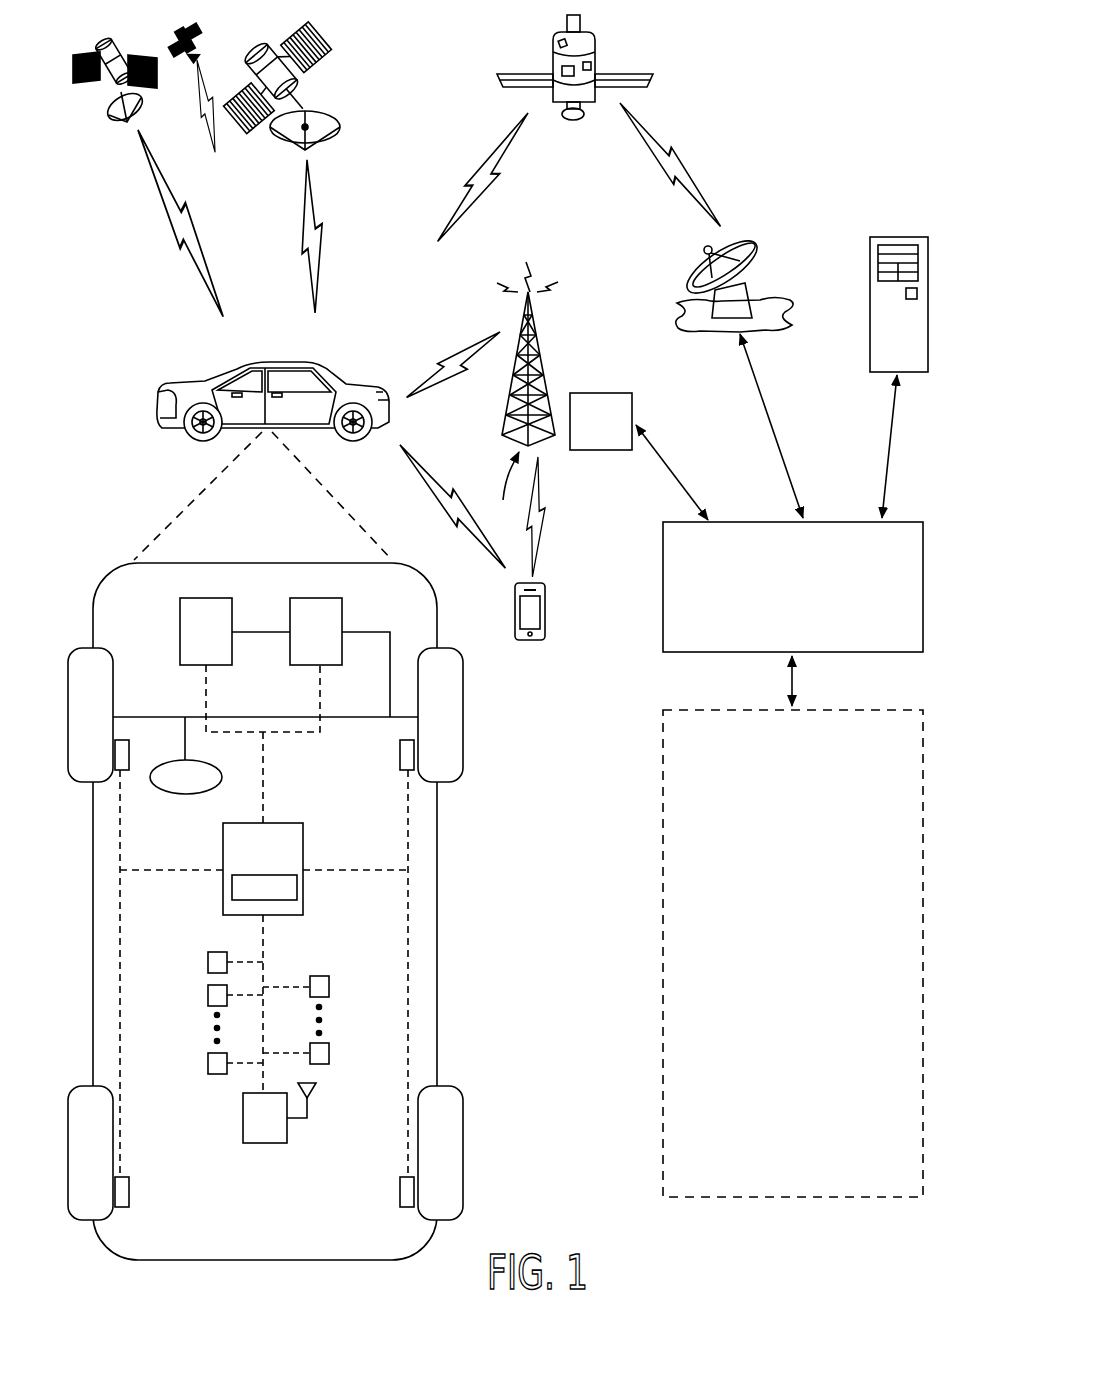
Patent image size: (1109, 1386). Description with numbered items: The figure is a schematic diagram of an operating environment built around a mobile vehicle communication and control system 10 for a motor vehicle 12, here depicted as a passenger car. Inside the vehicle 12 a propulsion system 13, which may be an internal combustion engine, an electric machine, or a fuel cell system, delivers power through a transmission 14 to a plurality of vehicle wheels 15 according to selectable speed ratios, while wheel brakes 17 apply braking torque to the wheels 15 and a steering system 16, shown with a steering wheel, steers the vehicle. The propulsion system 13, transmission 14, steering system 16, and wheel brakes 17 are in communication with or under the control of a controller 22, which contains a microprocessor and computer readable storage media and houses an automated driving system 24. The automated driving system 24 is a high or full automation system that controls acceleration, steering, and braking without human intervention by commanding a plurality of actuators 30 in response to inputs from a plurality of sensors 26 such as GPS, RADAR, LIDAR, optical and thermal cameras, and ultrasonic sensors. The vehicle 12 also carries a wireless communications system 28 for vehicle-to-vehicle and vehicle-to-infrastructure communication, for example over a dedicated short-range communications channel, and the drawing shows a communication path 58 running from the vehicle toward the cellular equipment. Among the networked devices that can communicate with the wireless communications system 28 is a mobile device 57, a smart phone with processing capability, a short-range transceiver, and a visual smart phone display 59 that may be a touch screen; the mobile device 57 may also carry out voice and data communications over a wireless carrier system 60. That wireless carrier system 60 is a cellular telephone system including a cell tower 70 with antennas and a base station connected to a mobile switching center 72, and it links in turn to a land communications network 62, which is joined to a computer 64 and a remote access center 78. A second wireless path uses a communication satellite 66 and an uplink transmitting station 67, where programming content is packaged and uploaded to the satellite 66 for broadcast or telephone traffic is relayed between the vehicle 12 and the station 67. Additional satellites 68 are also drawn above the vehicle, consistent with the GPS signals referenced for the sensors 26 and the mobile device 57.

The mobile vehicle communication and control system 10 is at (822, 134).
The motor vehicle 12 is at (158, 404).
The propulsion system 13 is at (180, 633).
The transmission 14 is at (343, 620).
The vehicle wheels 15 is at (104, 682).
The steering system 16 is at (185, 795).
The wheel brakes 17 is at (121, 766).
The controller 22 is at (303, 878).
The automated driving system 24 is at (280, 902).
The sensors 26 is at (208, 963).
The wireless communications system 28 is at (265, 1145).
The actuators 30 is at (329, 987).
The mobile device 57 is at (560, 619).
The wireless communication link 58 is at (435, 482).
The visual smart phone display 59 is at (534, 612).
The wireless carrier system 60 is at (506, 494).
The land communications network 62 is at (925, 584).
The computer 64 is at (930, 298).
The communication satellite 66 is at (595, 52).
The uplink transmitting station 67 is at (766, 298).
The GPS satellites 68 is at (345, 60).
The cell tower 70 is at (543, 348).
The mobile switching center 72 is at (597, 450).
The remote access center 78 is at (802, 1200).